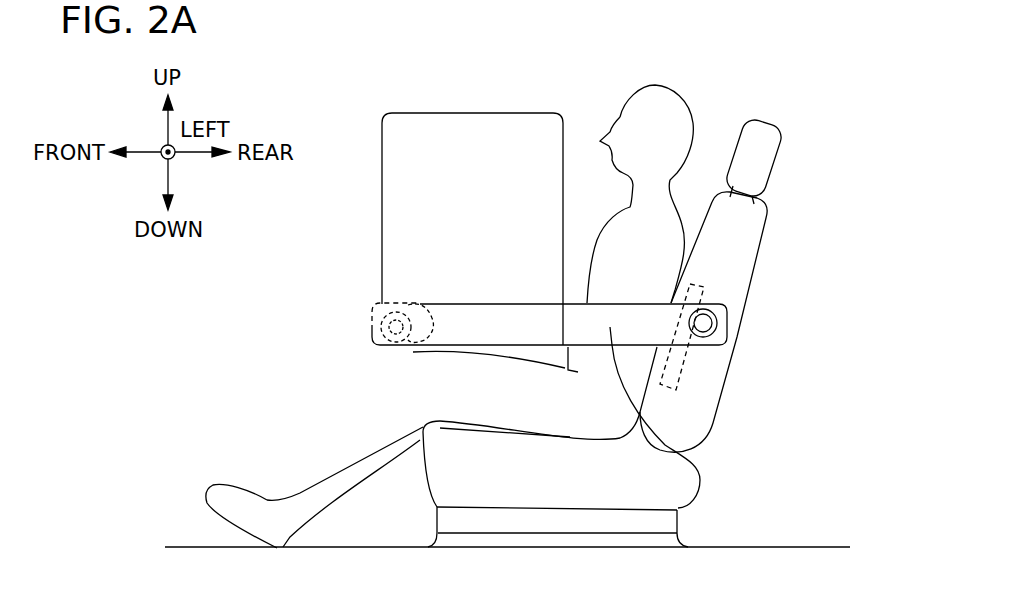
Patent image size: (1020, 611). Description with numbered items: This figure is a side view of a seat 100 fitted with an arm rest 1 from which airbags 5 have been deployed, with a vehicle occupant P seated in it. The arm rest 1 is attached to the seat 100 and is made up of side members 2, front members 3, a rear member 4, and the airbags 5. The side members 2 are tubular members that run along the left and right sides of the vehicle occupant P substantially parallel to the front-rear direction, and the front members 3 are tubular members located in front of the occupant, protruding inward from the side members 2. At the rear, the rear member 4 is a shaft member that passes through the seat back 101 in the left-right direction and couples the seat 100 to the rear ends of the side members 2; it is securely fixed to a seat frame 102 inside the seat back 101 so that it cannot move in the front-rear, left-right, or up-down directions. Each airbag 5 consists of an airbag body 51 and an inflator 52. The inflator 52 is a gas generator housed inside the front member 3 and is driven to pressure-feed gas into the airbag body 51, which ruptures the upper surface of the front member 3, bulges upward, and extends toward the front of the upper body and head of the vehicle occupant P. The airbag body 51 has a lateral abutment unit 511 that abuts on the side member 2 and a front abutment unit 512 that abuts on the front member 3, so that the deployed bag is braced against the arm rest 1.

The arm rest 1 is at (552, 375).
The side member 2 is at (647, 383).
The front member 3 is at (375, 323).
The rear member 4 is at (717, 321).
The airbag 5 is at (418, 229).
The airbag body 51 is at (383, 188).
The inflator 52 is at (362, 284).
The lateral abutment unit 511 is at (488, 346).
The front abutment unit 512 is at (373, 352).
The seat 100 is at (800, 161).
The seat back 101 is at (760, 233).
The seat frame 102 is at (680, 364).
The vehicle occupant P is at (655, 84).